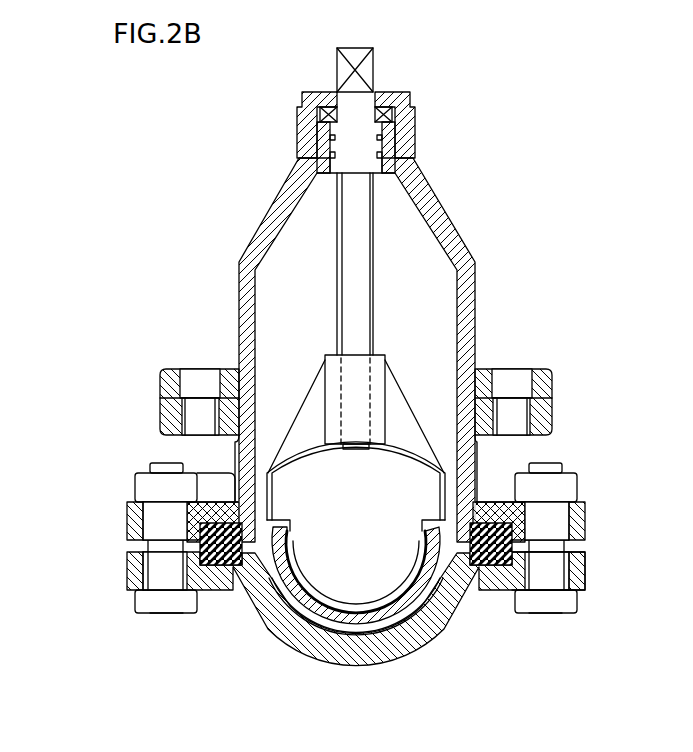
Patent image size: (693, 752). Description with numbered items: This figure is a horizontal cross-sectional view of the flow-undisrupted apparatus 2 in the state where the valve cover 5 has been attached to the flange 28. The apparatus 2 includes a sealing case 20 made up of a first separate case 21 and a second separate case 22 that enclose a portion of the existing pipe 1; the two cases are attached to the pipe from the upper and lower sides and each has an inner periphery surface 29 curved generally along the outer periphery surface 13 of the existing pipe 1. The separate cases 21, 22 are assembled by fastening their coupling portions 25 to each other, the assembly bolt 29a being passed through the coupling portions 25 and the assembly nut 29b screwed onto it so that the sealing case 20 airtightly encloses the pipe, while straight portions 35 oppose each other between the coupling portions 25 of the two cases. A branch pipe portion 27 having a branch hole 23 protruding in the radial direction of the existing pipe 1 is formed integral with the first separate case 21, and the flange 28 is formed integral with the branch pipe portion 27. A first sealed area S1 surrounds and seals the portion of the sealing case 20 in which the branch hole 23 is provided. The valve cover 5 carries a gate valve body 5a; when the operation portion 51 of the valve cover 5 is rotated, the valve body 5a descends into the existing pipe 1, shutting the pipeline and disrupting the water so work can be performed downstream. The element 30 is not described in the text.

The existing pipe 1 is at (300, 608).
The apparatus 2 is at (186, 209).
The valve cover 5 is at (432, 201).
The valve body 5a is at (306, 481).
The outer periphery surface 13 is at (418, 634).
The sealing case 20 is at (636, 500).
The first separate case 21 is at (587, 512).
The second separate case 22 is at (586, 576).
The branch hole 23 is at (452, 451).
The coupling portion 25 is at (132, 526).
The branch pipe portion 27 is at (235, 452).
The flange 28 is at (162, 412).
The inner periphery surface 29 is at (327, 641).
The assembly bolt 29a is at (140, 604).
The assembly nut 29b is at (140, 484).
The ring 30 is at (365, 643).
The straight portion 35 is at (229, 567).
The operation portion 51 is at (376, 64).
The first sealed area S1 is at (432, 607).